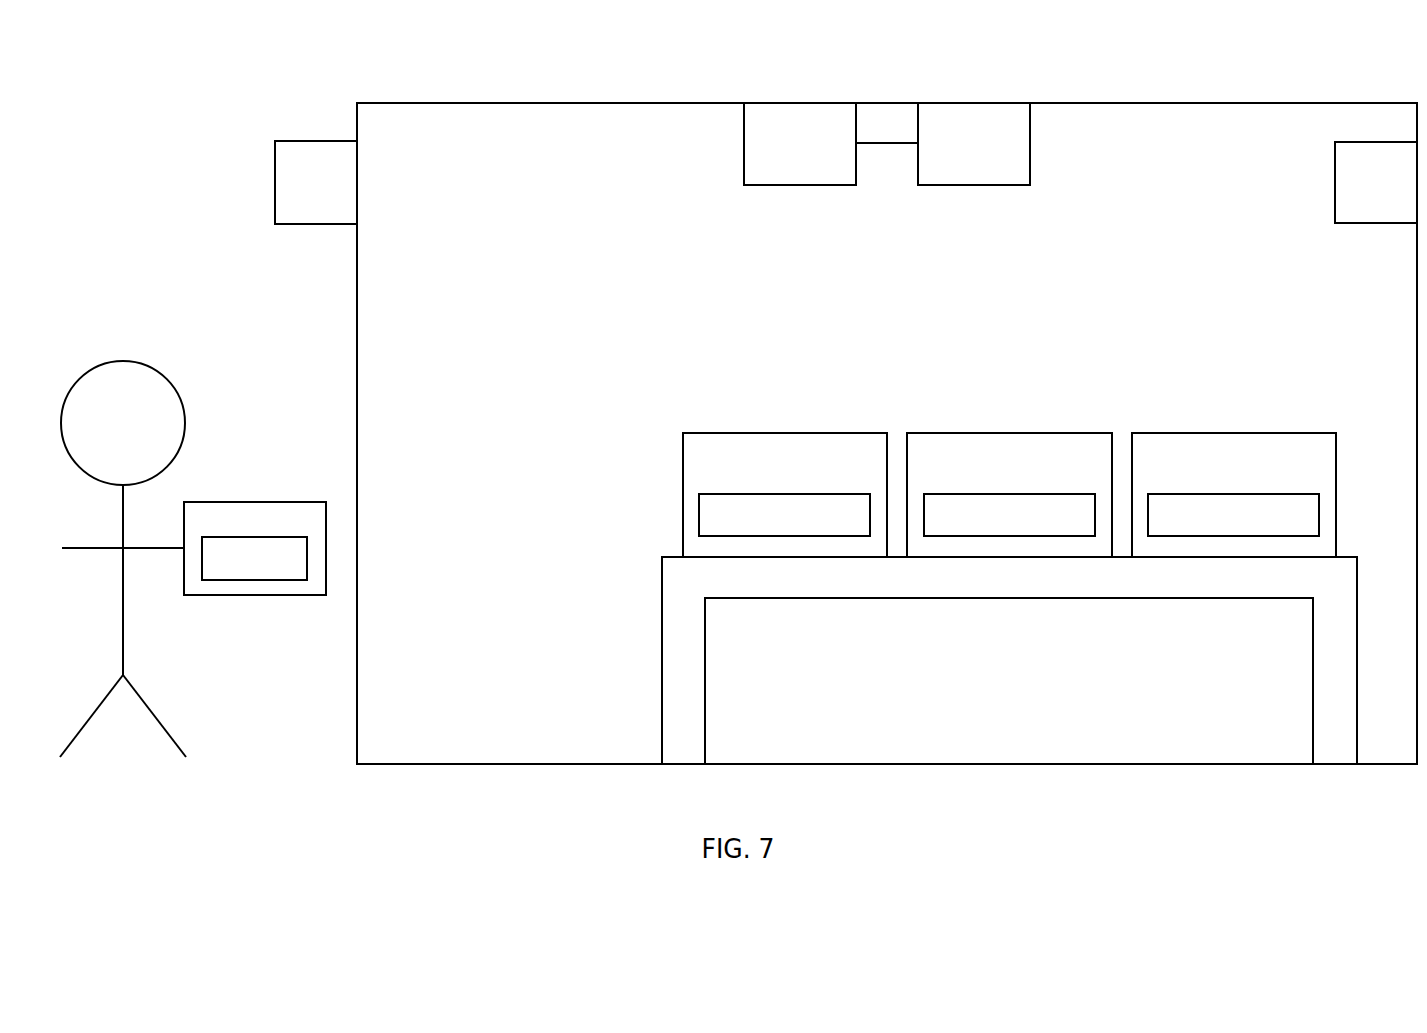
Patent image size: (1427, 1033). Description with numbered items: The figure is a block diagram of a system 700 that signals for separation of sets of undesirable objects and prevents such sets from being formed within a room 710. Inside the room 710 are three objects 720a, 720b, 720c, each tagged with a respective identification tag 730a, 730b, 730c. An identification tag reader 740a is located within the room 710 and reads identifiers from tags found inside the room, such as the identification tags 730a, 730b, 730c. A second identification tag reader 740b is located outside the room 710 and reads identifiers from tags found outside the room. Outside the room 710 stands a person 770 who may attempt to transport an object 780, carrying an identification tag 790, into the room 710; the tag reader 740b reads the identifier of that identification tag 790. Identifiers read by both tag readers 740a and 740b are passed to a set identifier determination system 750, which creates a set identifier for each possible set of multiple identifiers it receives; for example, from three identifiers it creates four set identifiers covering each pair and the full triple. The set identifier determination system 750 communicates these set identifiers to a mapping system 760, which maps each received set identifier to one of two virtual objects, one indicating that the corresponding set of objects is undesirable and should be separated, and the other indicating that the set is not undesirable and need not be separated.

The system 700 is at (772, 61).
The room 710 is at (357, 307).
The object 720a is at (724, 433).
The object 720b is at (949, 433).
The object 720c is at (1173, 433).
The identification tag 730a is at (846, 494).
The identification tag 730b is at (1072, 494).
The identification tag 730c is at (1296, 494).
The identification tag reader 740a is at (1335, 183).
The identification tag reader 740b is at (275, 182).
The set identifier determination system 750 is at (744, 143).
The mapping system 760 is at (1030, 143).
The person 770 is at (123, 361).
The object 780 is at (254, 502).
The identification tag 790 is at (254, 580).